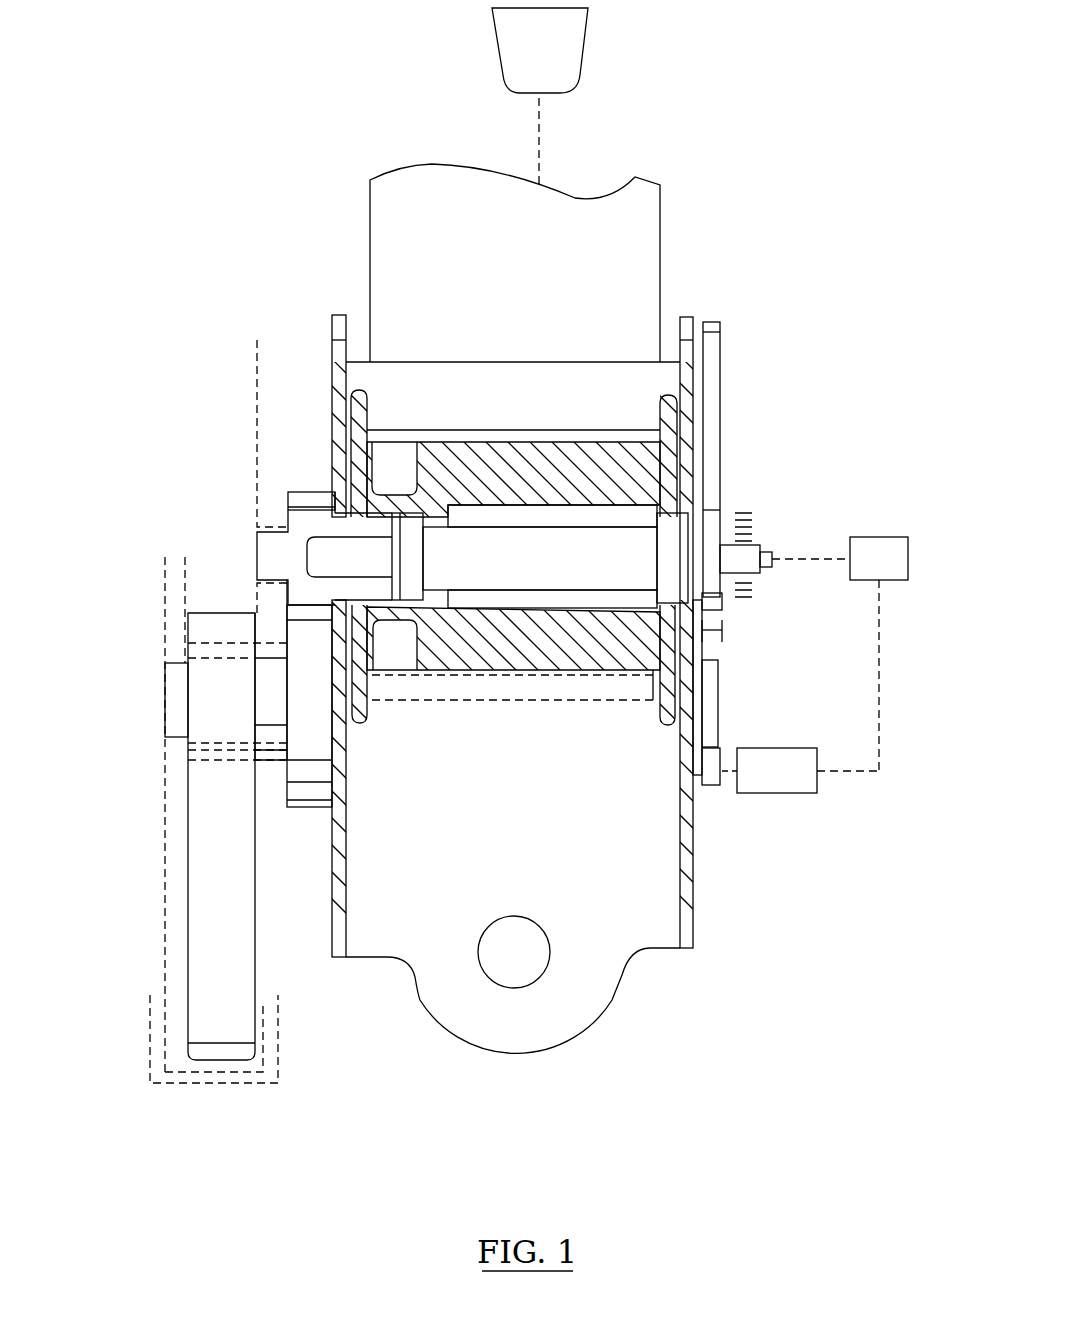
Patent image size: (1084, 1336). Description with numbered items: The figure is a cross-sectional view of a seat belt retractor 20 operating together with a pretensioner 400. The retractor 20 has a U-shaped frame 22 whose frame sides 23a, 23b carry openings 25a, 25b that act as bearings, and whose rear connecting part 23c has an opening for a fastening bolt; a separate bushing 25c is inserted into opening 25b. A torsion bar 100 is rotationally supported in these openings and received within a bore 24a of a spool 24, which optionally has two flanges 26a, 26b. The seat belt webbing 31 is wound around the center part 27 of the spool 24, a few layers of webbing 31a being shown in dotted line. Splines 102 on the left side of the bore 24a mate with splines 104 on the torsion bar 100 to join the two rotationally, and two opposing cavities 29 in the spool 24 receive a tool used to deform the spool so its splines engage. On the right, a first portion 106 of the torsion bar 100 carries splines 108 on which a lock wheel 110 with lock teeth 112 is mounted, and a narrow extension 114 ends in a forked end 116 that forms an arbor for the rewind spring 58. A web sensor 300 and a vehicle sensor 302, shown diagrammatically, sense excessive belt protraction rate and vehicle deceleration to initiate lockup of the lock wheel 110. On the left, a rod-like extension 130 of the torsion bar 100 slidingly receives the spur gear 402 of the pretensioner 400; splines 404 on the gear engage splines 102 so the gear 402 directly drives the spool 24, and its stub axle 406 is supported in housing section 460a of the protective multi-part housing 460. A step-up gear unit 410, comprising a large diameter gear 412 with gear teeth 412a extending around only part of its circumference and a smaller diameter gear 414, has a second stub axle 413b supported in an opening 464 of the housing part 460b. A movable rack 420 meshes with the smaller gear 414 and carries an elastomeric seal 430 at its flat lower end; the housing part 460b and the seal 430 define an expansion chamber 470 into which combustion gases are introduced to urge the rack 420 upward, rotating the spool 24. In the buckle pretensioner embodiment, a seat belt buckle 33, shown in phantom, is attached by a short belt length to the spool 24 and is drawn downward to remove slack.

The seat belt retractor 20 is at (722, 372).
The U-shaped frame 22 is at (694, 890).
The frame side 23a is at (346, 893).
The frame side 23b is at (693, 862).
The rear or connecting part 23c is at (588, 1020).
The spool 24 is at (548, 420).
The bore 24a is at (640, 612).
The opening 25a is at (337, 500).
The opening 25b is at (710, 665).
The bushing 25c is at (705, 633).
The flange 26a is at (368, 410).
The flange 26b is at (660, 412).
The center part of the spool 27 is at (600, 660).
The cavity 29 is at (395, 460).
The seat belt webbing 31 is at (378, 221).
The layers of webbing 31a is at (580, 700).
The seat belt buckle 33 is at (572, 47).
The rewind spring 58 is at (743, 512).
The torsion bar 100 is at (552, 565).
The splines 102 is at (445, 512).
The splines 104 is at (410, 595).
The right hand first portion 106 is at (700, 555).
The splines 108 is at (722, 605).
The lock wheel 110 is at (712, 745).
The lock teeth 112 is at (709, 320).
The narrow extension 114 is at (757, 548).
The forked end 116 is at (768, 568).
The rod-like extension 130 is at (302, 535).
The web sensor 300 is at (880, 556).
The vehicle sensor 302 is at (790, 775).
The pretensioner 400 is at (155, 905).
The spur gear 402 is at (300, 485).
The splines 404 is at (320, 563).
The stub axle 406 is at (285, 560).
The step-up gear unit 410 is at (270, 770).
The large diameter gear 412 is at (297, 715).
The gear teeth 412a is at (338, 790).
The second stub axle 413b is at (180, 660).
The smaller diameter gear 414 is at (215, 760).
The rack 420 is at (220, 977).
The elastomeric seal 430 is at (215, 1052).
The protective multi-part housing 460 is at (248, 353).
The housing section 460a is at (262, 512).
The housing part 460b is at (158, 793).
The opening 464 is at (172, 740).
The expansion chamber 470 is at (233, 1067).